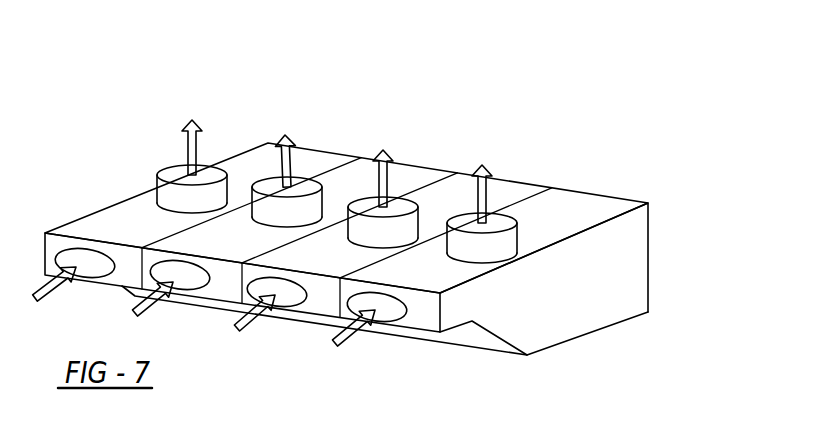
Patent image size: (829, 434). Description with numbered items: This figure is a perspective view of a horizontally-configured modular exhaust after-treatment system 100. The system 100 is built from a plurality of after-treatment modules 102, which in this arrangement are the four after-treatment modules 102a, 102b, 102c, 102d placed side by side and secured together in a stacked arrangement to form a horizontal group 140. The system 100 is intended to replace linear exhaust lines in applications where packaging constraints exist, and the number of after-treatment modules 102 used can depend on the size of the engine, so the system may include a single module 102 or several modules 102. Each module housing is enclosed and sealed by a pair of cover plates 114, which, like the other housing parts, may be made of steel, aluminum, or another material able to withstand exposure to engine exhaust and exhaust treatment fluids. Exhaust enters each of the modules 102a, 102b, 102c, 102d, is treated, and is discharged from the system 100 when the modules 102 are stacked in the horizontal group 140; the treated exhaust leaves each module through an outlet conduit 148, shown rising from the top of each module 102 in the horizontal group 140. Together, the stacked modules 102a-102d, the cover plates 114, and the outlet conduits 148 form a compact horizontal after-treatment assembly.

The modular exhaust after-treatment system 100 is at (661, 85).
The after-treatment module 102 is at (303, 148).
The after-treatment module 102a is at (650, 235).
The after-treatment module 102b is at (533, 184).
The after-treatment module 102c is at (437, 168).
The after-treatment module 102d is at (332, 148).
The cover plate 114 is at (545, 332).
The horizontal group 140 is at (648, 312).
The outlet conduit 148 is at (163, 167).